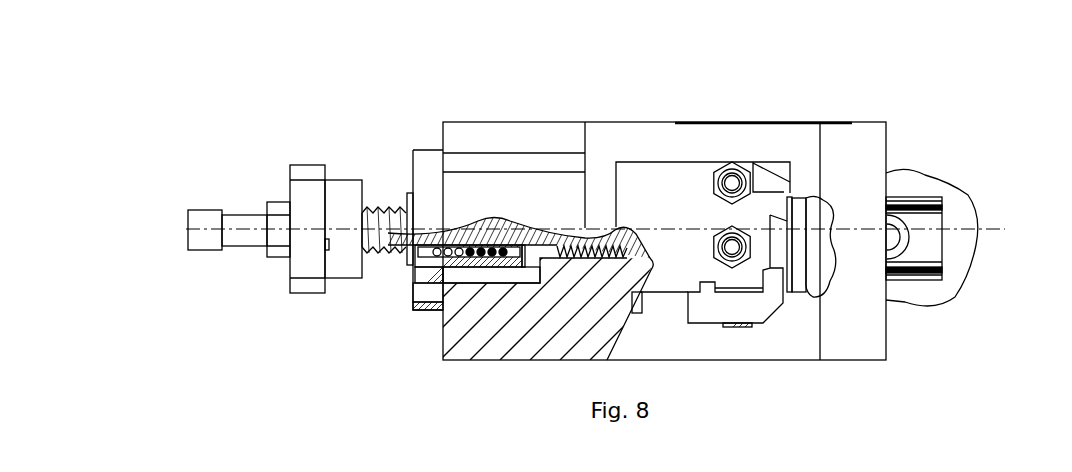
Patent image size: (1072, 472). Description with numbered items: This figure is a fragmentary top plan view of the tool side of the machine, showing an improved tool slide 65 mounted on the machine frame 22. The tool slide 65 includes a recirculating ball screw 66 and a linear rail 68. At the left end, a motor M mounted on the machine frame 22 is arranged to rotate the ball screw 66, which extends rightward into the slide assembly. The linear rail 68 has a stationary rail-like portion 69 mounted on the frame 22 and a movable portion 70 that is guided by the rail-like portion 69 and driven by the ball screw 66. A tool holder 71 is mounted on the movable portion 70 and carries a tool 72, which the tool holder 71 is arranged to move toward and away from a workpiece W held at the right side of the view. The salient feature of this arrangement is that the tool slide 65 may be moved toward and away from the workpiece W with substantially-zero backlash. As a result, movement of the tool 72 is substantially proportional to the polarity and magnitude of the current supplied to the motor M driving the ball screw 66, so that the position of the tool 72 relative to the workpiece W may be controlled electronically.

The tool slide 65 is at (380, 92).
The recirculating ball screw 66 is at (372, 288).
The linear rail 68 is at (900, 130).
The stationary rail-like portion 69 is at (947, 218).
The movable portion 70 is at (675, 363).
The tool holder 71 is at (666, 178).
The tool 72 is at (792, 193).
The machine frame 22 is at (973, 308).
The workpiece W is at (827, 288).